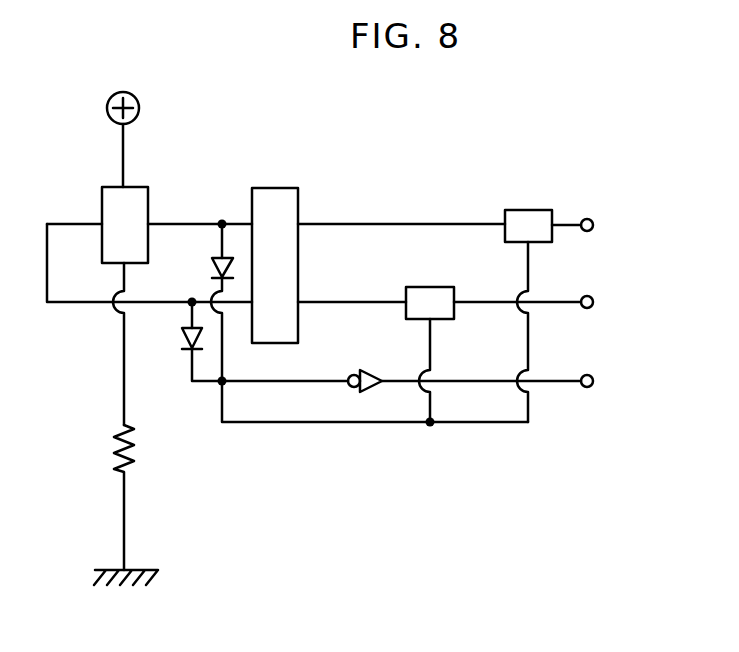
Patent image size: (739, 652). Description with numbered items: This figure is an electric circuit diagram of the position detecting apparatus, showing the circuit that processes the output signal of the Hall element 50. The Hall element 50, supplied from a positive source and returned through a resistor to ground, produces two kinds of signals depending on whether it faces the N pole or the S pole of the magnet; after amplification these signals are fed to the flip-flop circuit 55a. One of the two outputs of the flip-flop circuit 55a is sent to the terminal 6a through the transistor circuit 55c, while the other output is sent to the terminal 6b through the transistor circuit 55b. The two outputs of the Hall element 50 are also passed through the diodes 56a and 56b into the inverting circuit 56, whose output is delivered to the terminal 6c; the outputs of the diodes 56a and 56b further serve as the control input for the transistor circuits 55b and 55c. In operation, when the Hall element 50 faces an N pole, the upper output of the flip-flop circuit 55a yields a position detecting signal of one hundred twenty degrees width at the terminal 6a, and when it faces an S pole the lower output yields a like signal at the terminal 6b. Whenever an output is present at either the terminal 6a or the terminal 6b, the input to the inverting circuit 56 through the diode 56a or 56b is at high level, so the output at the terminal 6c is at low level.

The Hall element 50 is at (144, 185).
The flip-flop circuit 55a is at (275, 187).
The transistor circuit 55b is at (421, 287).
The transistor circuit 55c is at (527, 210).
The inverting circuit 56 is at (375, 370).
The diode 56a is at (208, 262).
The diode 56b is at (182, 343).
The terminal 6a is at (593, 225).
The terminal 6b is at (593, 302).
The terminal 6c is at (593, 381).